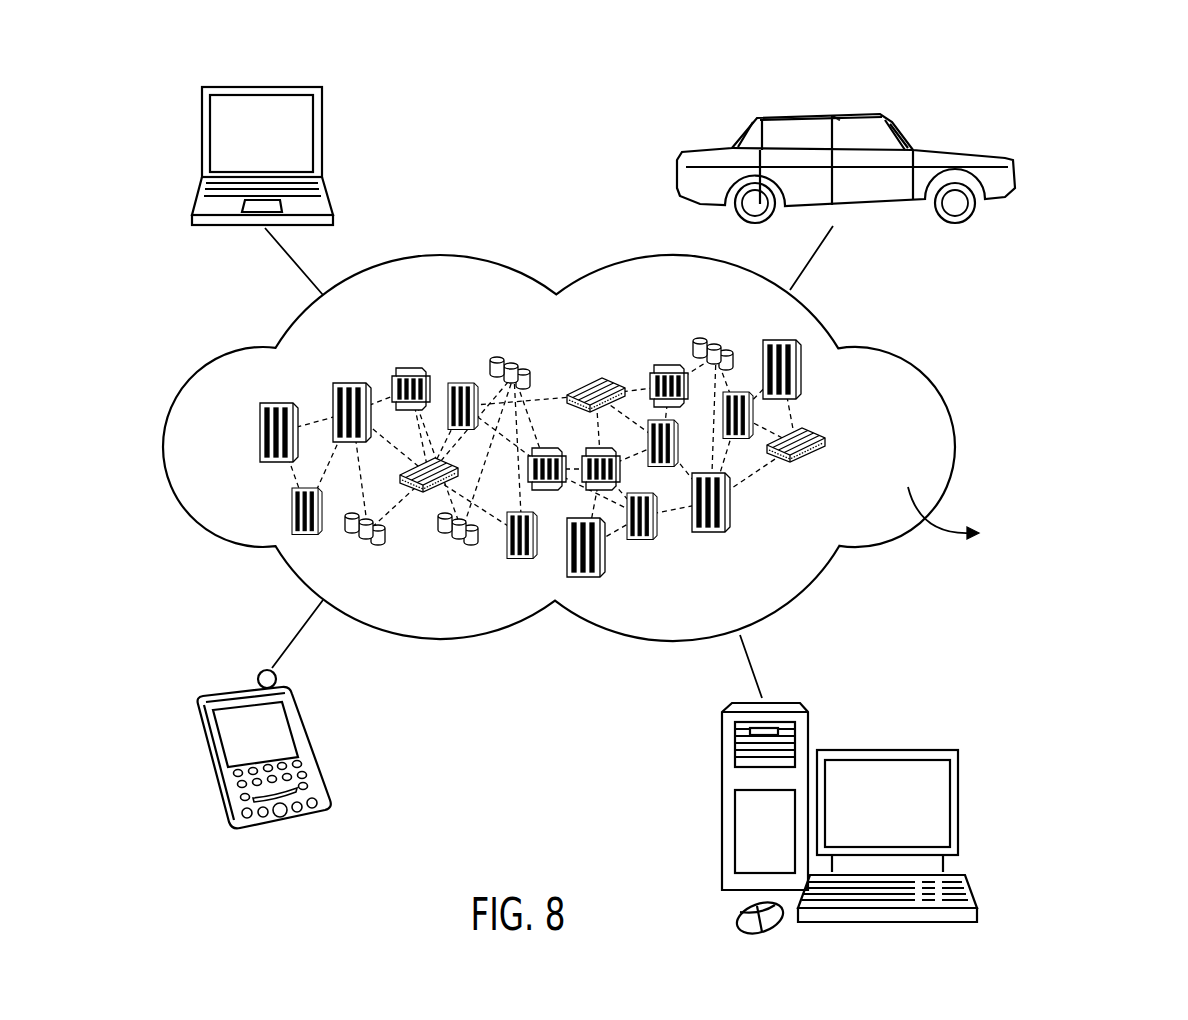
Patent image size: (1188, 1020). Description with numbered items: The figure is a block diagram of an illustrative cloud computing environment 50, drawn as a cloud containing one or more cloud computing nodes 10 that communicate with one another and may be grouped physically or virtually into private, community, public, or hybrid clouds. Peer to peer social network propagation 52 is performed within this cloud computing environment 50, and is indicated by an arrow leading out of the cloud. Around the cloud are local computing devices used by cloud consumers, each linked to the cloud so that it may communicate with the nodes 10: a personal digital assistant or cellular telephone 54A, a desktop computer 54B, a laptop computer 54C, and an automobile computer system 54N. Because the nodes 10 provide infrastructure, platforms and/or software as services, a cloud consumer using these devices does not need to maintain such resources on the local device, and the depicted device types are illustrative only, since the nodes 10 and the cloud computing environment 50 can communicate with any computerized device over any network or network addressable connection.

The cloud computing nodes 10 is at (838, 447).
The cloud computing environment 50 is at (902, 355).
The peer to peer social network propagation 52 is at (1065, 477).
The personal digital assistant (PDA) or cellular telephone 54A is at (241, 687).
The desktop computer 54B is at (885, 748).
The laptop computer 54C is at (260, 85).
The automobile computer system 54N is at (823, 112).